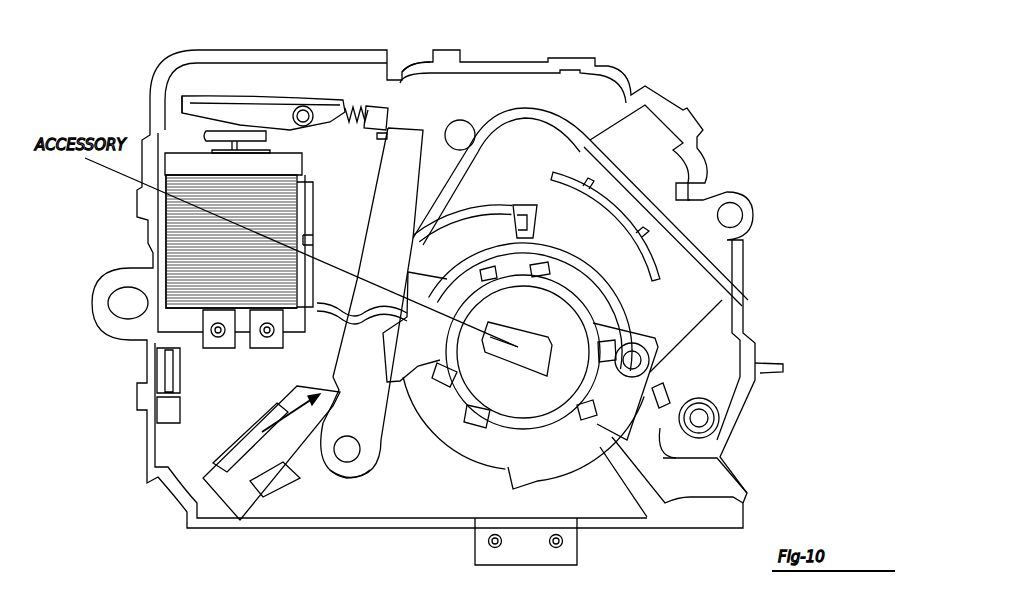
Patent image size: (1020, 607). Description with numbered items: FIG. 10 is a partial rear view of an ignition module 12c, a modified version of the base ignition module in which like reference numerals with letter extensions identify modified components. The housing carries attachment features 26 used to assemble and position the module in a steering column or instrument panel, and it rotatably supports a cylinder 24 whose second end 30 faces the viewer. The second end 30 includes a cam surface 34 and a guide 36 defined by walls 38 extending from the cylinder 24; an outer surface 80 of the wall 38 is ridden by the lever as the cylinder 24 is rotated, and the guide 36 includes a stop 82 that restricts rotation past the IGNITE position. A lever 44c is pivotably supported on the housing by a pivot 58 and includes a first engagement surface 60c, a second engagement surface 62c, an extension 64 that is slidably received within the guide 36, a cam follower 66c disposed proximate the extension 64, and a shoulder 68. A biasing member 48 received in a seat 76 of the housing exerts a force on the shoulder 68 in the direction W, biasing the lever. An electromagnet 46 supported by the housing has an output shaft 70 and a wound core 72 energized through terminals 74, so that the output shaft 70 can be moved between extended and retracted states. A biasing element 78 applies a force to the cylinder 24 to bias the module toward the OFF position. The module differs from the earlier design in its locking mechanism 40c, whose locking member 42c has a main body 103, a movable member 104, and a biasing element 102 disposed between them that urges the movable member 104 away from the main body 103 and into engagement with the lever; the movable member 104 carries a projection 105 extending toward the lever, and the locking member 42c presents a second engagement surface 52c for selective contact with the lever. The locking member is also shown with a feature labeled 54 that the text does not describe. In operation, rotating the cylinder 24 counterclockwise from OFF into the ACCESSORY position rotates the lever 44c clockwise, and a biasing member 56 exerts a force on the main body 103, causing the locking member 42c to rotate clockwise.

The ignition module 12c is at (673, 88).
The cylinder 24 is at (615, 305).
The attachment features 26 is at (100, 297).
The second end 30 is at (480, 380).
The cam surface 34 is at (400, 440).
The guide 36 is at (520, 214).
The walls 38 is at (519, 212).
The locking mechanism 40c is at (243, 96).
The locking member 42c is at (258, 100).
The lever 44c is at (467, 153).
The electromagnet 46 is at (200, 263).
The biasing member 48 is at (270, 441).
The second engagement surface 52c is at (403, 77).
The pivot pin 54 is at (293, 122).
The biasing member 56 is at (218, 148).
The pivot 58 is at (352, 455).
The first engagement surface 60c is at (415, 170).
The second engagement surface 62c is at (378, 164).
The extension 64 is at (437, 255).
The cam follower 66c is at (390, 308).
The shoulder 68 is at (333, 378).
The output shaft 70 is at (225, 150).
The wound core 72 is at (175, 213).
The terminals 74 is at (265, 338).
The seat 76 is at (263, 497).
The biasing element 78 is at (668, 406).
The outer surface 80 is at (590, 273).
The stop 82 is at (533, 225).
The biasing element 102 is at (350, 106).
The main body 103 is at (188, 97).
The movable member 104 is at (380, 112).
The projection 105 is at (377, 137).